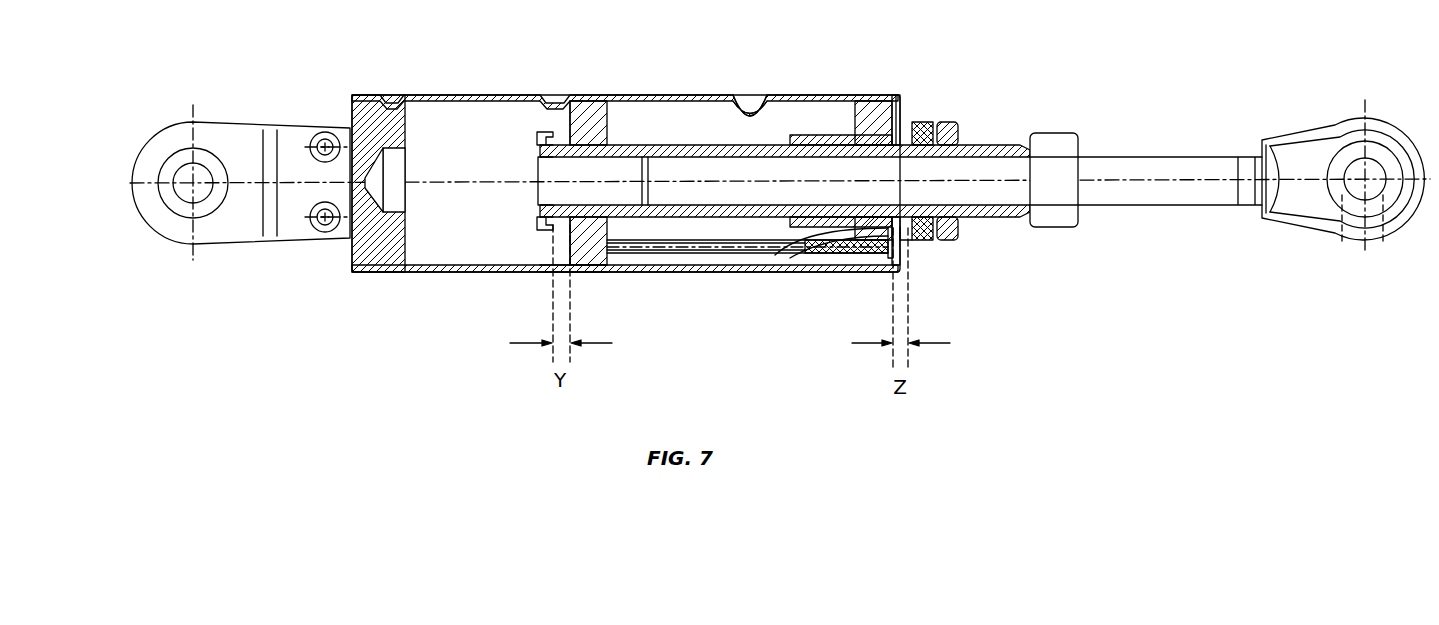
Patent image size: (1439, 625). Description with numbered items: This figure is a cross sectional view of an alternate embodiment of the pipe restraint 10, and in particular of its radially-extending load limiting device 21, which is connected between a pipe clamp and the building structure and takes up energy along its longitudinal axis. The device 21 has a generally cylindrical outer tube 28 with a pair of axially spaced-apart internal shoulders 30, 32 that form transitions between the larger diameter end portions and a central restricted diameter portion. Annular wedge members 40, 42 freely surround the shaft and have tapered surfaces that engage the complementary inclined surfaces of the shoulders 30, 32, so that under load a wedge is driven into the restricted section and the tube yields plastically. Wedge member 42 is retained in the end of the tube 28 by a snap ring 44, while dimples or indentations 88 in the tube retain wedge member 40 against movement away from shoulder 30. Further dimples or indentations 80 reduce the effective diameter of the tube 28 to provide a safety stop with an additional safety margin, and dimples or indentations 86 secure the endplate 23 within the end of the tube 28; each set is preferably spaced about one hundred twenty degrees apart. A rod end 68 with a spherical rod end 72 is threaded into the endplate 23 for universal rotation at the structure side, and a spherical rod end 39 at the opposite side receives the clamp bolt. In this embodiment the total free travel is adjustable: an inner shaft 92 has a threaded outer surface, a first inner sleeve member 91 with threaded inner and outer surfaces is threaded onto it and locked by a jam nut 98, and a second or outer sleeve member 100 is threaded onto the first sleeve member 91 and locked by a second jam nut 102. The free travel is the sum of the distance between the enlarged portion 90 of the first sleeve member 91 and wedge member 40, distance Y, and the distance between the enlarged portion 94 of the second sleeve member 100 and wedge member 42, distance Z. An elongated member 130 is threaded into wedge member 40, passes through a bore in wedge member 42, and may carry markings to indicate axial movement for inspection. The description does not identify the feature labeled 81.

The pipe restraint 10 is at (326, 333).
The load limiting device 21 is at (473, 308).
The endplate 23 is at (352, 108).
The outer tube 28 is at (483, 95).
The internal shoulder 30 is at (598, 272).
The internal shoulder 32 is at (880, 265).
The spherical rod end 39 is at (1372, 186).
The wedge member 40 is at (628, 110).
The wedge member 42 is at (810, 240).
The snap ring 44 is at (898, 103).
The rod end 68 is at (215, 232).
The spherical rod end 72 is at (203, 165).
The dimples or indentations 80 is at (765, 123).
The curved fluid passage 81 is at (845, 258).
The dimples or indentations 86 is at (428, 105).
The dimples or indentations 88 is at (543, 110).
The enlarged portion 90 is at (537, 220).
The first inner sleeve member 91 is at (990, 145).
The inner shaft 92 is at (945, 205).
The enlarged portion 94 is at (910, 240).
The jam nut 98 is at (1060, 140).
The second or outer sleeve member 100 is at (820, 135).
The second jam nut 102 is at (950, 127).
The elongated member 130 is at (685, 250).